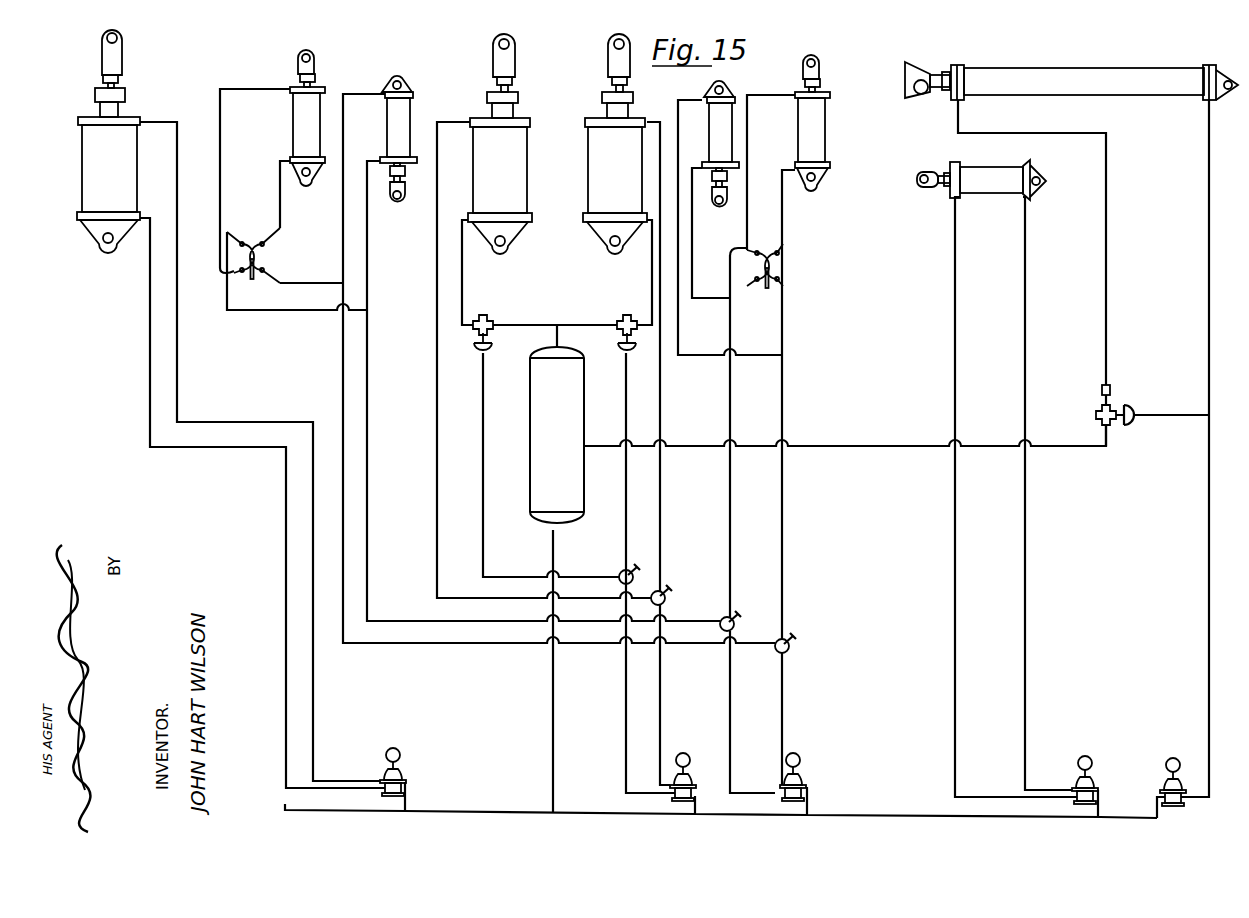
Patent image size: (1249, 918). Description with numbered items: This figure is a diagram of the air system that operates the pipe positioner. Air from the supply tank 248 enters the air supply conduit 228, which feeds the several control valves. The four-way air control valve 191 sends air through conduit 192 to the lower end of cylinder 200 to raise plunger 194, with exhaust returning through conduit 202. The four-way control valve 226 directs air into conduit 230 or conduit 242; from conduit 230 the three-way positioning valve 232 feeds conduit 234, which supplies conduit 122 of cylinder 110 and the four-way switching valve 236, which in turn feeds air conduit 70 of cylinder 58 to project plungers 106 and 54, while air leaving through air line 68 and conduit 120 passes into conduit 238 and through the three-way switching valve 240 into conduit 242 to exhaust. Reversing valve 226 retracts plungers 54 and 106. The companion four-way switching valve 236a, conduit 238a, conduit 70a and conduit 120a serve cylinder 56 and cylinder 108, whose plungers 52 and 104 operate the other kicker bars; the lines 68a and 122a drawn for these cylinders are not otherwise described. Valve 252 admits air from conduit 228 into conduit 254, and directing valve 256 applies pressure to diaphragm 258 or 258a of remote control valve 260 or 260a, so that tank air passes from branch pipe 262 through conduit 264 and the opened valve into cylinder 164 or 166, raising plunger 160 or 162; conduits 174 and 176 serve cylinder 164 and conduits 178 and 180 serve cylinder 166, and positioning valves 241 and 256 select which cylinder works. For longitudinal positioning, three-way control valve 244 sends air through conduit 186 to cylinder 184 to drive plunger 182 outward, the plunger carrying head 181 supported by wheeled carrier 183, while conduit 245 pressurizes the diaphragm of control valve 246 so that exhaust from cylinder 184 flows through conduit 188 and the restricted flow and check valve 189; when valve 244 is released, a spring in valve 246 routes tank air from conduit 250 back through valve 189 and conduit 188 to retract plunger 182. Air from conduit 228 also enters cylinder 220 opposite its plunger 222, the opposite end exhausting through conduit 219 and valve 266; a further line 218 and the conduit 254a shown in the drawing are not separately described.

The plunger 194 is at (117, 80).
The air cylinder 200 is at (95, 180).
The conduit 192 is at (150, 322).
The conduit 202 is at (177, 334).
The four-way air control valve 191 is at (402, 774).
The air supply conduit 228 is at (525, 812).
The conduit 254 is at (626, 745).
The valve 252 is at (705, 737).
The conduit 254a is at (483, 566).
The directing valve 256 is at (619, 573).
The conduit 180 is at (437, 410).
The positioning valve 241 is at (660, 591).
The conduit 176 is at (662, 417).
The conduit 178 is at (463, 255).
The conduit 174 is at (652, 278).
The remote control valve 260a is at (476, 318).
The conduit 264 is at (582, 323).
The remote control valve 260 is at (624, 322).
The branch pipe 262 is at (560, 334).
The diaphragm 258a is at (492, 350).
The diaphragm 258 is at (631, 354).
The air supply tank 248 is at (532, 432).
The conduit 234 is at (783, 492).
The three-way positioning valve 232 is at (789, 644).
The three-way switching valve 240 is at (730, 618).
The conduit 238 is at (730, 390).
The conduit 242 is at (728, 705).
The conduit 230 is at (783, 705).
The four-way control valve 226 is at (805, 768).
The conduit 122 is at (678, 100).
The conduit 120 is at (693, 253).
The air conduit 68 is at (785, 76).
The four-way switching valve 236 is at (782, 268).
The air conduit 70 is at (784, 222).
The plunger 106 is at (730, 186).
The fluid actuated cylinder 110 is at (727, 118).
The fluid actuated cylinder 58 is at (827, 118).
The plunger 54 is at (820, 84).
The fluid actuated cylinder 56 is at (302, 118).
The plunger 52 is at (312, 84).
The conduit 68a is at (260, 88).
The conduit 70a is at (280, 207).
The four-way switching valve 236a is at (263, 253).
The conduit 238a is at (318, 307).
The conduit 120a is at (368, 242).
The conduit 122a is at (350, 90).
The fluid actuated cylinder 108 is at (393, 122).
The plunger 104 is at (405, 190).
The cylinder 166 is at (510, 174).
The plunger 162 is at (492, 82).
The cylinder 164 is at (590, 145).
The plunger 160 is at (605, 87).
The air cylinder 184 is at (1060, 73).
The wheeled carrier 183 is at (925, 66).
The head 181 is at (937, 74).
The plunger 182 is at (956, 66).
The conduit 188 is at (993, 131).
The restricted flow and check valve 189 is at (1109, 393).
The four-way air actuated diaphragm control valve 246 is at (1114, 418).
The conduit 245 is at (1140, 414).
The air conduit 250 is at (1040, 450).
The conduit 186 is at (1209, 247).
The conduit 219 is at (952, 370).
The conduit 218 is at (1027, 610).
The valve 266 is at (1074, 789).
The three-way control valve 244 is at (1162, 791).
The cylinder 220 is at (995, 185).
The plunger 222 is at (942, 190).